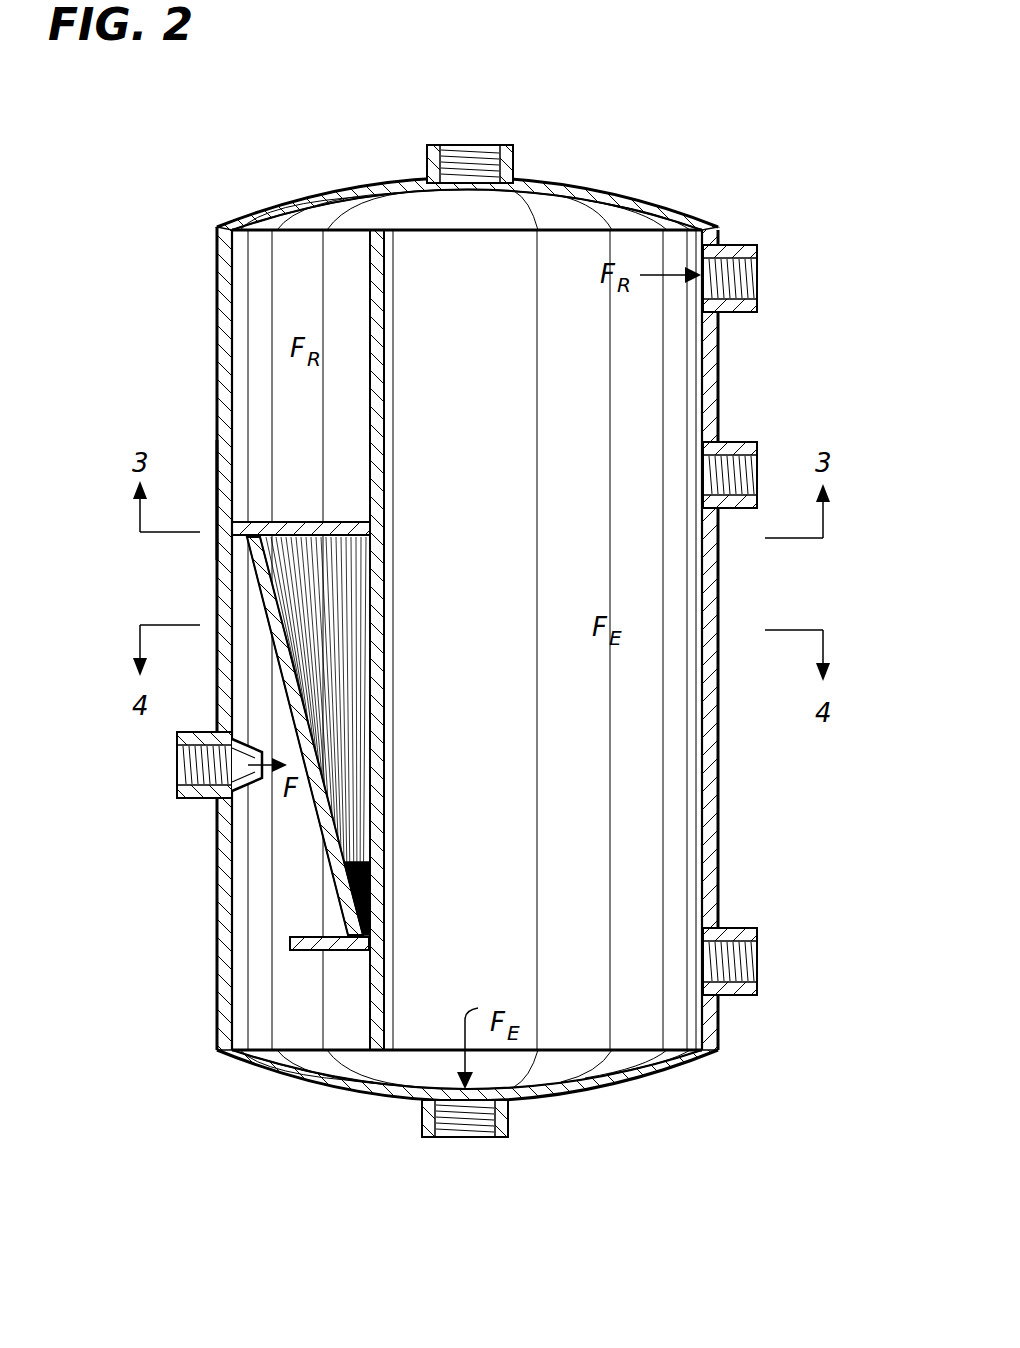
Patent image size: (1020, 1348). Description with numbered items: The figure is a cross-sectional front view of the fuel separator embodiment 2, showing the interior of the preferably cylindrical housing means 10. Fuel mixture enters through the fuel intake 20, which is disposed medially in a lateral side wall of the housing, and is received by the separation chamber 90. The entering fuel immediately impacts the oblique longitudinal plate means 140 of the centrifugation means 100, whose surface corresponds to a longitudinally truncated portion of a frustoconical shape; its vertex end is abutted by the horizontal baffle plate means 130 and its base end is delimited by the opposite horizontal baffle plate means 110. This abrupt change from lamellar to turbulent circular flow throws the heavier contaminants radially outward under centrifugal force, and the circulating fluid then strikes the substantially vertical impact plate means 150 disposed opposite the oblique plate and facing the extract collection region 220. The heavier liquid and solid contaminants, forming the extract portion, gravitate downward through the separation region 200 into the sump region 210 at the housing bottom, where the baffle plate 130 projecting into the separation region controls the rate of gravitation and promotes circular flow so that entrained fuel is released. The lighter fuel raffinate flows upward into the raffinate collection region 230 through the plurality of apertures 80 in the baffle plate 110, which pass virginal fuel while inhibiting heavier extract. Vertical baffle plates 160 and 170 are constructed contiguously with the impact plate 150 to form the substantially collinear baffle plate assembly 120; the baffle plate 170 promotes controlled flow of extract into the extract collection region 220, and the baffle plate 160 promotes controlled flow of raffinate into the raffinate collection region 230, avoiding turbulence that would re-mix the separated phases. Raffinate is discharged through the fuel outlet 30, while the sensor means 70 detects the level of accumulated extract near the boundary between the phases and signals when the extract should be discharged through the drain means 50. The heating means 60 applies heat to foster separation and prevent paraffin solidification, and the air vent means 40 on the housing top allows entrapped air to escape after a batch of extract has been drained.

The embodiment of the present invention 2 is at (225, 195).
The housing means 10 is at (218, 1055).
The fuel intake 20 is at (178, 790).
The fuel outlet 30 is at (757, 260).
The air vent means 40 is at (500, 145).
The drain means 50 is at (490, 1137).
The heating means 60 is at (757, 958).
The sensor means 70 is at (757, 442).
The apertures 80 is at (218, 508).
The separation chamber 90 is at (257, 683).
The centrifugation means 100 is at (290, 563).
The baffle plate means 110 is at (313, 520).
The baffle plate assembly 120 is at (388, 578).
The baffle plate means 130 is at (290, 943).
The oblique longitudinal plate means 140 is at (318, 865).
The impact plate means 150 is at (388, 740).
The vertical baffle plate 160 is at (388, 372).
The vertical baffle plate 170 is at (388, 990).
The separation region 200 is at (280, 838).
The sump region 210 is at (560, 1075).
The extract collection region 220 is at (672, 755).
The raffinate collection region 230 is at (258, 357).